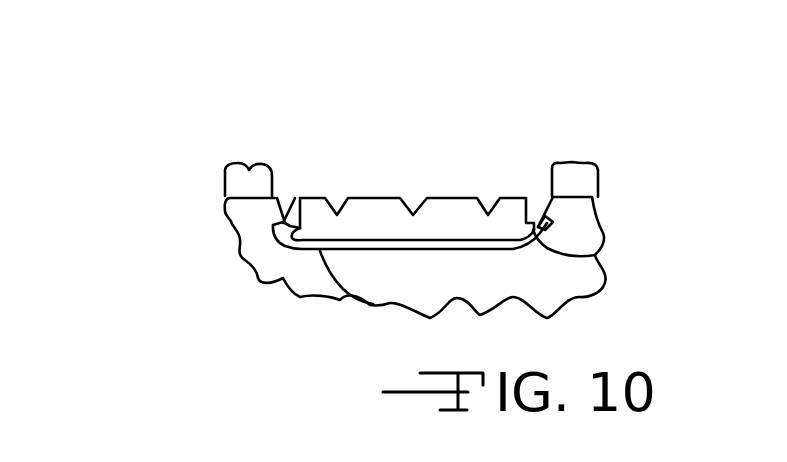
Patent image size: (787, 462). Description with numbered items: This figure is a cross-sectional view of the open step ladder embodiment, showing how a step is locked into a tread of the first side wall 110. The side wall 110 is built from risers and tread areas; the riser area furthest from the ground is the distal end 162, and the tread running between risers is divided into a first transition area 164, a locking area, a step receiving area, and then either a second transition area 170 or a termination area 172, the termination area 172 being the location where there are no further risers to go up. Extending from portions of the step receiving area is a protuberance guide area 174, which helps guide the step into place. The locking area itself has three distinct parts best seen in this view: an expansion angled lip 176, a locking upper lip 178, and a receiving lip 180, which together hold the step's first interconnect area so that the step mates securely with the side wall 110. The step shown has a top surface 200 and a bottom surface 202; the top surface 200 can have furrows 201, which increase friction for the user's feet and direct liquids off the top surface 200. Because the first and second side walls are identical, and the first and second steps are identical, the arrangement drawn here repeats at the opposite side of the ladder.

The first side wall 110 is at (300, 274).
The distal end 162 is at (225, 205).
The first transition area 164 is at (249, 170).
The second transition area 170 is at (633, 162).
The termination area 172 is at (573, 163).
The protuberance guide area 174 is at (410, 158).
The expansion angled lip 176 is at (278, 198).
The locking upper lip 178 is at (295, 198).
The receiving lip 180 is at (383, 306).
The top surface 200 is at (417, 129).
The furrows 201 is at (490, 198).
The bottom surface 202 is at (597, 254).